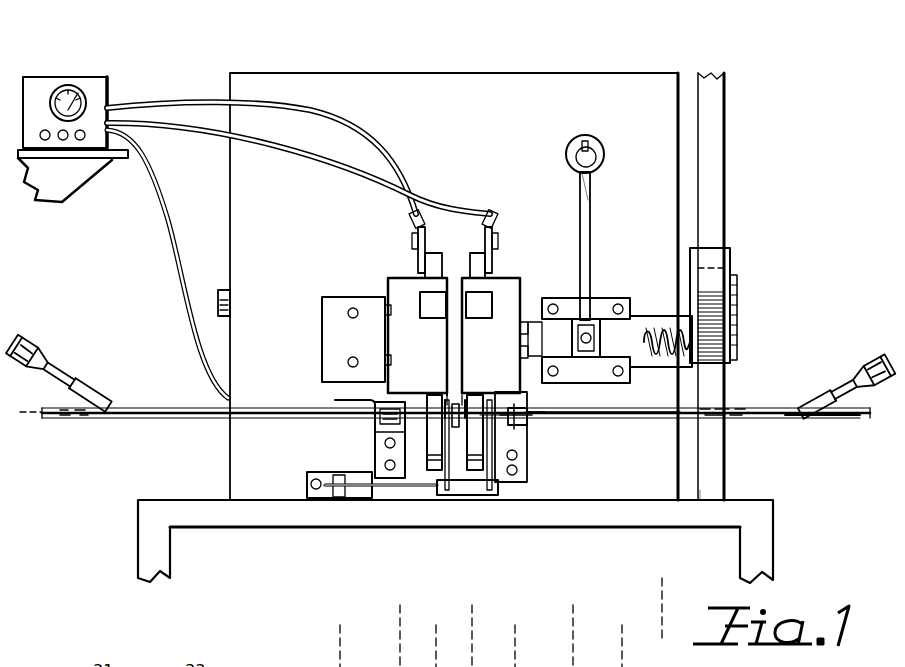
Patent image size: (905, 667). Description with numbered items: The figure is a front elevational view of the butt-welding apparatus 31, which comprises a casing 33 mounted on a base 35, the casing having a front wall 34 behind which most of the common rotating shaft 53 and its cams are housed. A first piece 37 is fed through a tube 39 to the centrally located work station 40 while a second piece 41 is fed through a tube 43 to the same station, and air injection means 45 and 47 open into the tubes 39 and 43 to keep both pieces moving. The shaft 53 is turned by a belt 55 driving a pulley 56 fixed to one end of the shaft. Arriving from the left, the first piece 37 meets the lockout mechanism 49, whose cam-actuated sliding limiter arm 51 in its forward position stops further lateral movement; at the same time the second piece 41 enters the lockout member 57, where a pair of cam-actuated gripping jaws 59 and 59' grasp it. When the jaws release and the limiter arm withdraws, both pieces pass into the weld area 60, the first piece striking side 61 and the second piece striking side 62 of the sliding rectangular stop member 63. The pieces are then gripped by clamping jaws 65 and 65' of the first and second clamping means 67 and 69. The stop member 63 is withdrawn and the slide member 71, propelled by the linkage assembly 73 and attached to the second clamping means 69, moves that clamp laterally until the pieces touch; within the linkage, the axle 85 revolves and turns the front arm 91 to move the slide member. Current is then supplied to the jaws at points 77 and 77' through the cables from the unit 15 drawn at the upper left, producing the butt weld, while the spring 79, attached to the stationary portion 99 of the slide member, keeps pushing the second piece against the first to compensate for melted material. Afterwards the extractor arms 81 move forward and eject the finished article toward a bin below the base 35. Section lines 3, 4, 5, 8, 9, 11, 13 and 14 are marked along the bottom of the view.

The control unit 15 is at (100, 58).
The apparatus 31 is at (800, 218).
The casing 33 is at (497, 70).
The front wall 34 is at (376, 82).
The base 35 is at (775, 505).
The first piece 37 is at (84, 420).
The tube 39 is at (178, 420).
The work station 40 is at (338, 270).
The second piece 41 is at (745, 420).
The tube 43 is at (805, 420).
The air injection means 45 is at (58, 330).
The air injection means 47 is at (834, 374).
The lockout mechanism 49 is at (372, 438).
The limiter arm 51 is at (378, 406).
The common rotating shaft 53 is at (220, 295).
The belt 55 is at (724, 148).
The pulley 56 is at (731, 258).
The lockout member 57 is at (552, 428).
The gripping jaw 59 is at (525, 435).
The gripping jaw 59' is at (542, 434).
The weld area 60 is at (455, 384).
The side 61 is at (446, 406).
The side 62 is at (463, 412).
The stop member 63 is at (458, 398).
The clamping jaw 65 is at (432, 480).
The clamping jaw 65' is at (480, 480).
The first clamping means 67 is at (388, 282).
The second clamping means 69 is at (526, 290).
The slide member 71 is at (610, 276).
The linkage assembly 73 is at (570, 186).
The point 77 is at (426, 231).
The point 77' is at (476, 244).
The spring 79 is at (666, 316).
The extractor arms 81 is at (498, 484).
The axle 85 is at (604, 142).
The front arm 91 is at (594, 206).
The stationary portion 99 is at (630, 374).
The section line 3 is at (372, 641).
The section line 4 is at (432, 617).
The section line 5 is at (466, 641).
The section line 8 is at (505, 617).
The section line 9 is at (547, 641).
The section line 11 is at (604, 617).
The section line 13 is at (660, 641).
The section line 14 is at (698, 584).